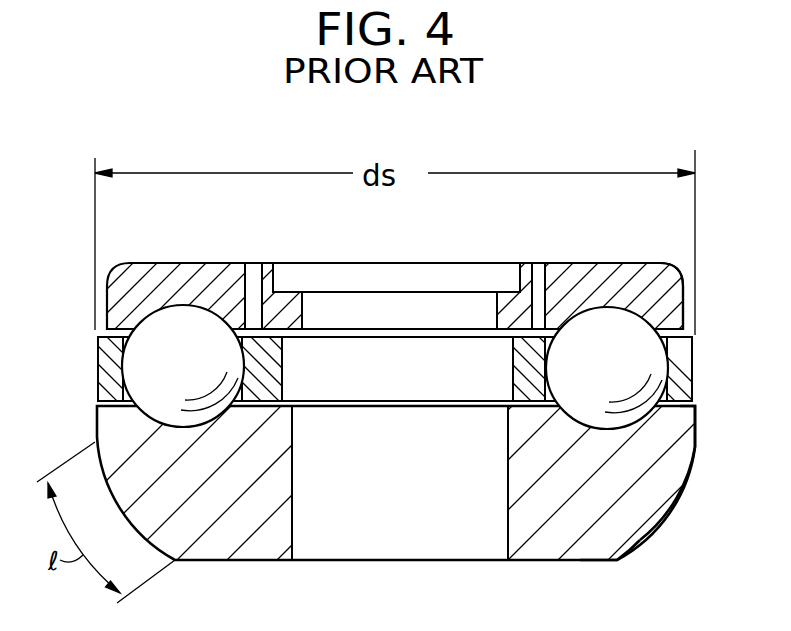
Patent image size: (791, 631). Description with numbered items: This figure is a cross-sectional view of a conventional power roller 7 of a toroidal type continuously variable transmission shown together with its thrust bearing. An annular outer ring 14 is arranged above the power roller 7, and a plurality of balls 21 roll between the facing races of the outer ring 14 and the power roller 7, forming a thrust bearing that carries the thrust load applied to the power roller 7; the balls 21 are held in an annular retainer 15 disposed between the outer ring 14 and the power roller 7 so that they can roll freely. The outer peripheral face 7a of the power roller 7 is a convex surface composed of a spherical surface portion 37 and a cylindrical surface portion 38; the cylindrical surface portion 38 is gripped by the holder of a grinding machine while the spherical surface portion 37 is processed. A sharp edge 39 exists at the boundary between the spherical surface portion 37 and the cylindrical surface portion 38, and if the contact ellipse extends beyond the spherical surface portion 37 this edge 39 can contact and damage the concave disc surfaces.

The power roller 7 is at (548, 566).
The outer peripheral face of the power roller 7a is at (682, 553).
The outer ring 14 is at (622, 283).
The annular retainer 15 is at (675, 333).
The balls 21 is at (173, 322).
The spherical surface portion 37 is at (680, 492).
The cylindrical surface portion 38 is at (696, 426).
The edge 39 is at (697, 445).